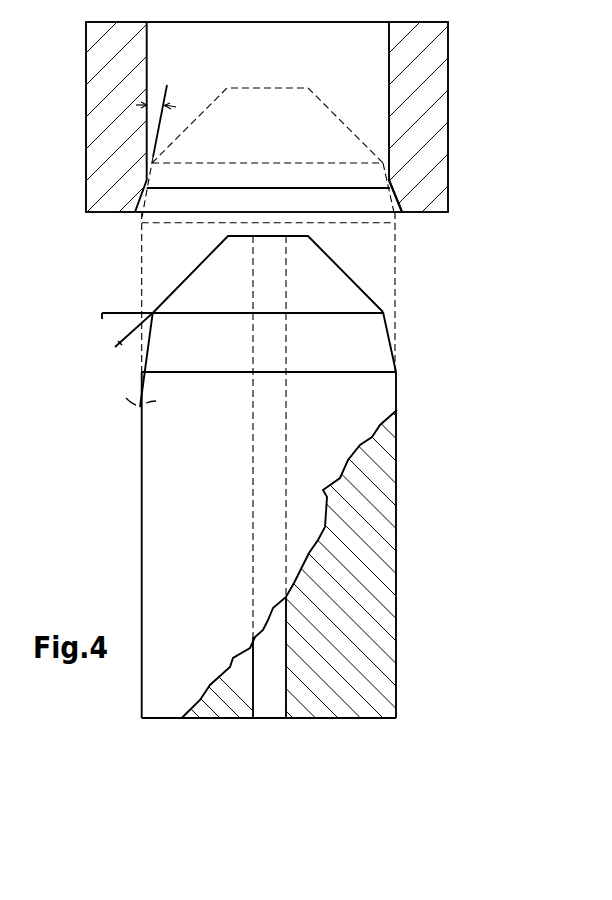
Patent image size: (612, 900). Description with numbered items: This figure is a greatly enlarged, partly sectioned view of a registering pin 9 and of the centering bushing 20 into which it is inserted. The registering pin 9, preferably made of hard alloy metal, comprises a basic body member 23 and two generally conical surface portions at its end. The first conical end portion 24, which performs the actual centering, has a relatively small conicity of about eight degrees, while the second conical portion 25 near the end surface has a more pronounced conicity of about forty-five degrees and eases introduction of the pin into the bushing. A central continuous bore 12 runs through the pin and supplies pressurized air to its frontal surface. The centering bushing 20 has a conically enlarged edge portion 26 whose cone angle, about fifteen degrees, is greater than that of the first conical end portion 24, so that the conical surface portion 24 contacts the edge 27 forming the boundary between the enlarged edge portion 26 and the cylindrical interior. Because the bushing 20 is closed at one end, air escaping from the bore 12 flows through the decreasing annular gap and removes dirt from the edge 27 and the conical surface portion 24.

The registering pin 9 is at (108, 444).
The central continuous bore 12 is at (272, 675).
The centering bushing 20 is at (425, 70).
The basic body member 23 is at (343, 418).
The first conical end portion 24 is at (370, 352).
The second conical portion 25 is at (322, 286).
The conically enlarged edge portion 26 is at (395, 198).
The edge 27 is at (390, 187).